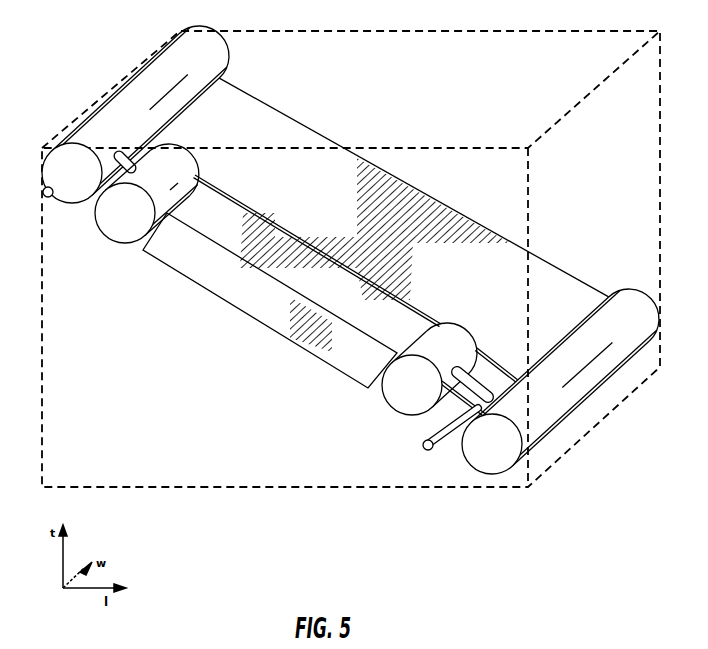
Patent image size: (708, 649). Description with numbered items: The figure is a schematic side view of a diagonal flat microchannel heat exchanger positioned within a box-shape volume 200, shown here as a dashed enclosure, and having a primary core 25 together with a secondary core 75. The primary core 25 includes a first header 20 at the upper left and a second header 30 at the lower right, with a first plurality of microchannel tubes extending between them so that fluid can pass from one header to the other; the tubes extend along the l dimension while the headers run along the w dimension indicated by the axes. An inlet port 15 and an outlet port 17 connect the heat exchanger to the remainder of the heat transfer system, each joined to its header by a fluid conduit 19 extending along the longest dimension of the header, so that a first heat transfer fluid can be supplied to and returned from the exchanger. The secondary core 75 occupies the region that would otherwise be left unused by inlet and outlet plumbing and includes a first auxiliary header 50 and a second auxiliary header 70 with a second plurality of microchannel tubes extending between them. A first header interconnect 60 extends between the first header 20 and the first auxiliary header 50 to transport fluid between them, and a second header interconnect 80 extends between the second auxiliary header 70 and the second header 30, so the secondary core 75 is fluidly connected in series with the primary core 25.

The box-shape volume 200 is at (384, 31).
The first header 20 is at (97, 106).
The fluid conduit 19 is at (55, 172).
The inlet port 15 is at (45, 191).
The first header interconnect 60 is at (121, 153).
The first auxiliary header 50 is at (125, 244).
The secondary core 75 is at (251, 316).
The second auxiliary header 70 is at (388, 397).
The second header interconnect 80 is at (472, 397).
The outlet port 17 is at (427, 452).
The primary core 25 is at (568, 280).
The second header 30 is at (597, 392).